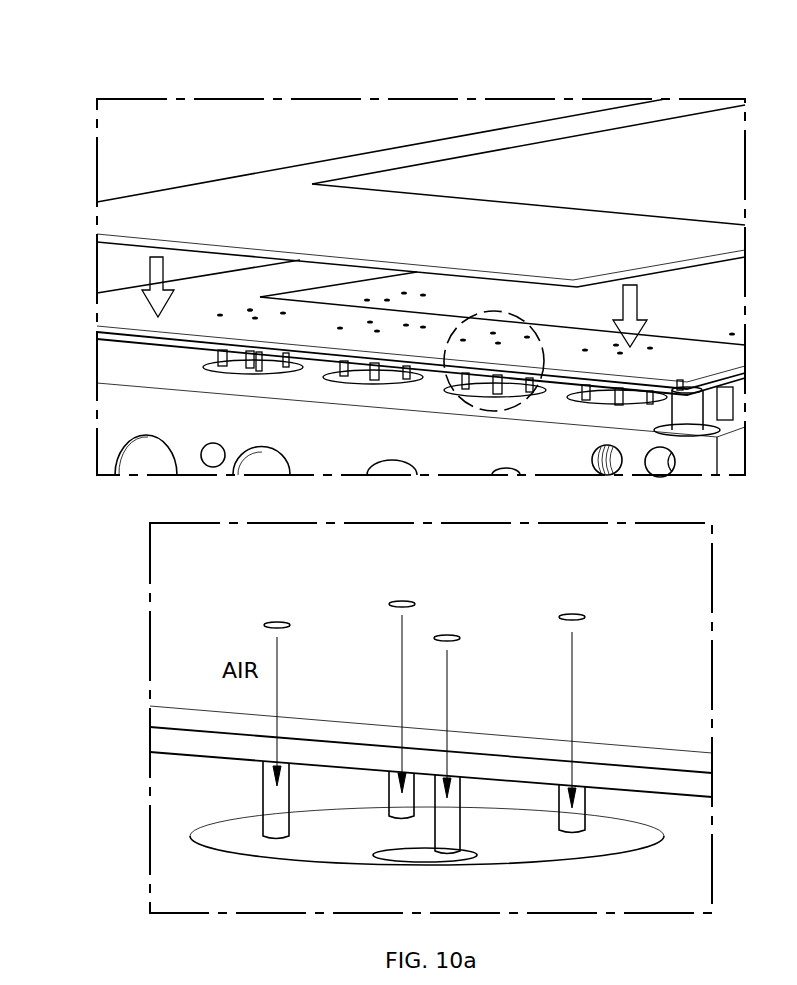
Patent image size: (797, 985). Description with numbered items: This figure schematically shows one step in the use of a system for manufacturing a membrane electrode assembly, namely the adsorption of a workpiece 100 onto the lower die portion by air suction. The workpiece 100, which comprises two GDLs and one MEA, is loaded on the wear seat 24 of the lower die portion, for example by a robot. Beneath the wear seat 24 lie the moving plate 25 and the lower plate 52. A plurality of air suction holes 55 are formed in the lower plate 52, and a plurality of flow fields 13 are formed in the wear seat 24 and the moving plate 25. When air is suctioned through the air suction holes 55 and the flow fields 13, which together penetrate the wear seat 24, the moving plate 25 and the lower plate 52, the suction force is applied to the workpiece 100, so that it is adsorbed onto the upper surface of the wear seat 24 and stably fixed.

The flow fields 13 is at (250, 310).
The workpiece 100 is at (277, 190).
The wear seat 24 is at (122, 310).
The moving plate 25 is at (125, 340).
The lower plate 52 is at (152, 370).
The air suction holes 55 is at (240, 372).